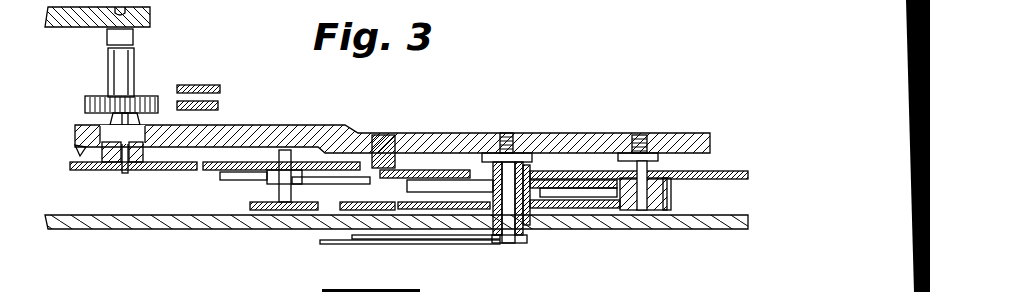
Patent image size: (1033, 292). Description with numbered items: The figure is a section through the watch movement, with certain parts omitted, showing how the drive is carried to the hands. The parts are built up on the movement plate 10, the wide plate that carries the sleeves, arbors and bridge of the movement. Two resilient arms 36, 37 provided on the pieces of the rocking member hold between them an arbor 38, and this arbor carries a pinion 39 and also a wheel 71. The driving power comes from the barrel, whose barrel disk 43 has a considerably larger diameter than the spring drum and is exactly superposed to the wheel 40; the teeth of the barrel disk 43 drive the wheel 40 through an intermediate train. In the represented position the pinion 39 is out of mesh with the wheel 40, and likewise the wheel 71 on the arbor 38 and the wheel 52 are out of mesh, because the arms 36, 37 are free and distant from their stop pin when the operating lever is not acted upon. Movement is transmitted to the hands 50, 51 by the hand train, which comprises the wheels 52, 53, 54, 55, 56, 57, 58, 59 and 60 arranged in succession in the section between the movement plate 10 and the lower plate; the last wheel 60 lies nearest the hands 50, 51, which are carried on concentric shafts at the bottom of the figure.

The movement plate 10 is at (338, 127).
The resilient arm 36 is at (80, 134).
The resilient arm 37 is at (54, 28).
The arbor 38 is at (136, 67).
The pinion 39 is at (85, 106).
The wheel 40 is at (220, 106).
The barrel disk 43 is at (222, 89).
The hand 50 is at (392, 244).
The hand 51 is at (428, 240).
The wheel 52 is at (242, 170).
The wheel 53 is at (274, 178).
The wheel 54 is at (322, 180).
The wheel 55 is at (400, 172).
The wheel 56 is at (462, 172).
The wheel 57 is at (532, 158).
The wheel 58 is at (722, 173).
The wheel 59 is at (668, 194).
The wheel 60 is at (560, 212).
The wheel 71 is at (178, 170).